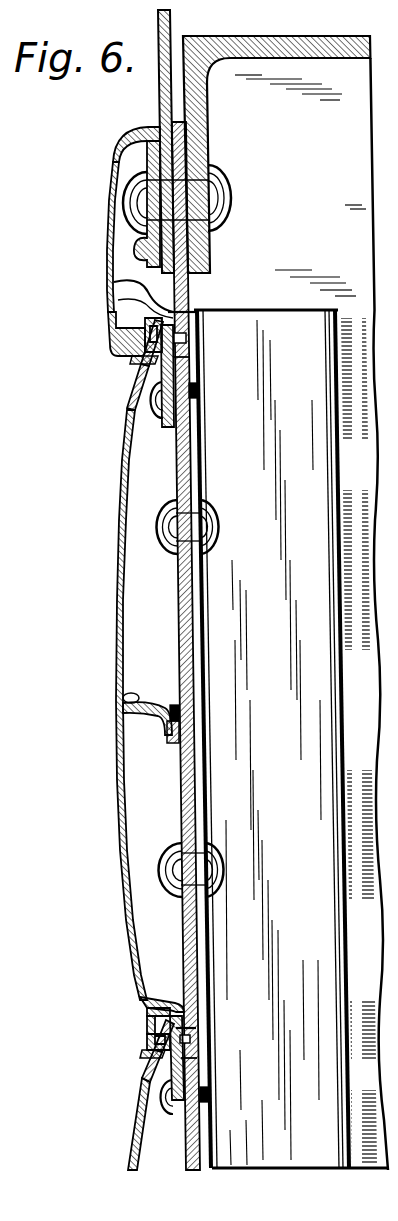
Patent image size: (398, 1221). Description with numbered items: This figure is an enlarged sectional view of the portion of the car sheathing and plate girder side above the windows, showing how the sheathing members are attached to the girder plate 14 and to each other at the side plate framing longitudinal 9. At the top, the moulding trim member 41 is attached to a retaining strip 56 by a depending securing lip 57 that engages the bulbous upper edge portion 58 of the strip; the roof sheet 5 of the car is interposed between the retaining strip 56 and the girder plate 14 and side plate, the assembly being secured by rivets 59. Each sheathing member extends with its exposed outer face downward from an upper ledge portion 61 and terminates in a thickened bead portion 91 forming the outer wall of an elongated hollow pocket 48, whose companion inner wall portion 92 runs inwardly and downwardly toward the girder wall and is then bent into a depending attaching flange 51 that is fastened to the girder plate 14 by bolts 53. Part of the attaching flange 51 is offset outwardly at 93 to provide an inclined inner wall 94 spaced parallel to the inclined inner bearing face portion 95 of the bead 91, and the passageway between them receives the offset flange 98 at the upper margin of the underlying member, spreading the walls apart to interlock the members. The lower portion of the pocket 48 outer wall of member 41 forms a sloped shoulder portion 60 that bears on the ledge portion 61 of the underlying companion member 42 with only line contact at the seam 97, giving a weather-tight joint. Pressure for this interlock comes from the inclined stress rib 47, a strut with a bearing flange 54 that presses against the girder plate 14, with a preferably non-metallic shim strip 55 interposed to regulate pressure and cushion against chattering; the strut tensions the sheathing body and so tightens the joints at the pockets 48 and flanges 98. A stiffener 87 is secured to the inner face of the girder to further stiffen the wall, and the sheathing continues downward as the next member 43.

The roof sheet 5 is at (158, 73).
The side plate framing longitudinal 9 is at (198, 128).
The girder plate 14 is at (188, 291).
The sheathing member 41 is at (108, 245).
The companion sheathing member 42 is at (117, 600).
The lower cover panel 43 is at (136, 1116).
The stress rib 47 is at (124, 696).
The pocket 48 is at (135, 326).
The attaching flange 51 is at (163, 424).
The bolt 53 is at (201, 389).
The bearing flange 54 is at (167, 733).
The shim strip 55 is at (172, 746).
The retaining strip 56 is at (143, 171).
The securing lip 57 is at (156, 128).
The bulbous upper edge portion 58 is at (118, 152).
The rivet 59 is at (229, 194).
The shoulder portion 60 is at (150, 350).
The ledge portion 61 is at (141, 371).
The stiffener 87 is at (291, 739).
The bead portion 91 is at (160, 1042).
The inner wall portion 92 is at (111, 280).
The offset 93 is at (189, 357).
The inner wall 94 is at (190, 312).
The inner bearing face portion 95 is at (146, 334).
The seam 97 is at (140, 360).
The offset flange 98 is at (186, 338).